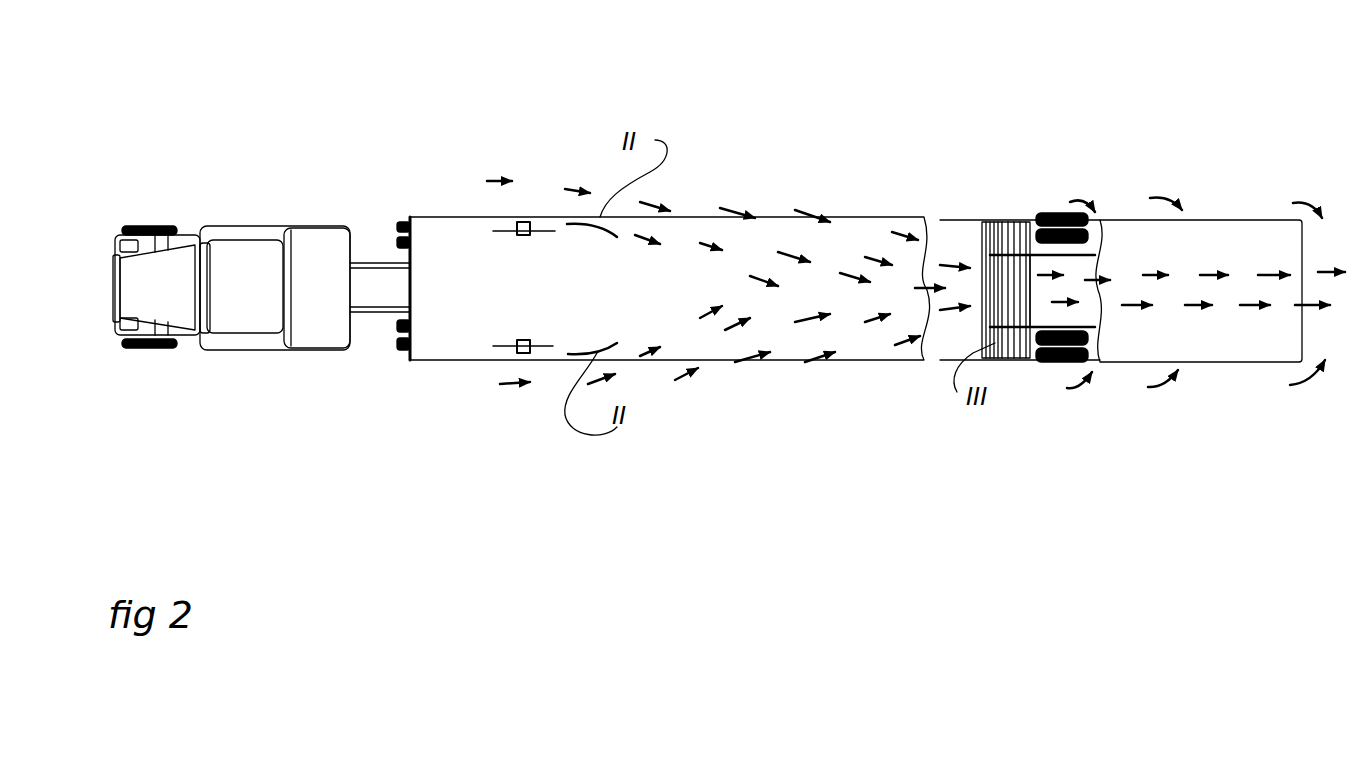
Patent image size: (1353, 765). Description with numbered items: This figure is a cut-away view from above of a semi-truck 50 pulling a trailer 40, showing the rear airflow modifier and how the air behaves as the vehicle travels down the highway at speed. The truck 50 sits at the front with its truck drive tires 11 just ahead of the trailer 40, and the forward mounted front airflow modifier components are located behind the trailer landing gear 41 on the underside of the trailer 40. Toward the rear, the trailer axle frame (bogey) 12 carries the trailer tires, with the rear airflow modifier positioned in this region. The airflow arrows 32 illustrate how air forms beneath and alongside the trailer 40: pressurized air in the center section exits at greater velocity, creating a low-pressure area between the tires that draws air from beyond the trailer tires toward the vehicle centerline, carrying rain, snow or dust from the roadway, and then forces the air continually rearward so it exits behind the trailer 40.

The truck drive tires 11 is at (400, 243).
The trailer axle frame (bogey) 12 is at (1077, 270).
The airflow arrows 32 is at (812, 370).
The trailer 40 is at (465, 217).
The landing gear 41 is at (523, 217).
The truck 50 is at (261, 288).